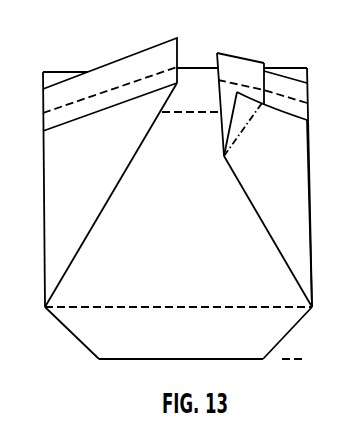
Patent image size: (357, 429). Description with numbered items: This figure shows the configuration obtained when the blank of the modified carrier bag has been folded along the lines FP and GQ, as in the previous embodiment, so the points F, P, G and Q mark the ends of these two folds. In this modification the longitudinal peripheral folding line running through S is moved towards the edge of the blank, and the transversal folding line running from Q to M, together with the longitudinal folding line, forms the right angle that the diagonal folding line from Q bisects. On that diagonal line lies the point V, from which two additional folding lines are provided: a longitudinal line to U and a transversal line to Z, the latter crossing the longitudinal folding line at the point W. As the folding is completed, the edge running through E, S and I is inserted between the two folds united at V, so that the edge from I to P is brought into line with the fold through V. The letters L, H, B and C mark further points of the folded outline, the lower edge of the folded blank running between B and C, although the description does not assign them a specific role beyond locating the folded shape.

The point F is at (58, 68).
The point E is at (116, 54).
The point L is at (102, 99).
The point S is at (197, 58).
The point I is at (115, 189).
The point Z is at (235, 95).
The point H is at (283, 75).
The point G is at (312, 178).
The point W is at (234, 92).
The point U is at (265, 119).
The point M is at (317, 202).
The point V is at (262, 205).
The point P is at (170, 198).
The point Q is at (296, 330).
The point B is at (74, 343).
The point C is at (200, 369).